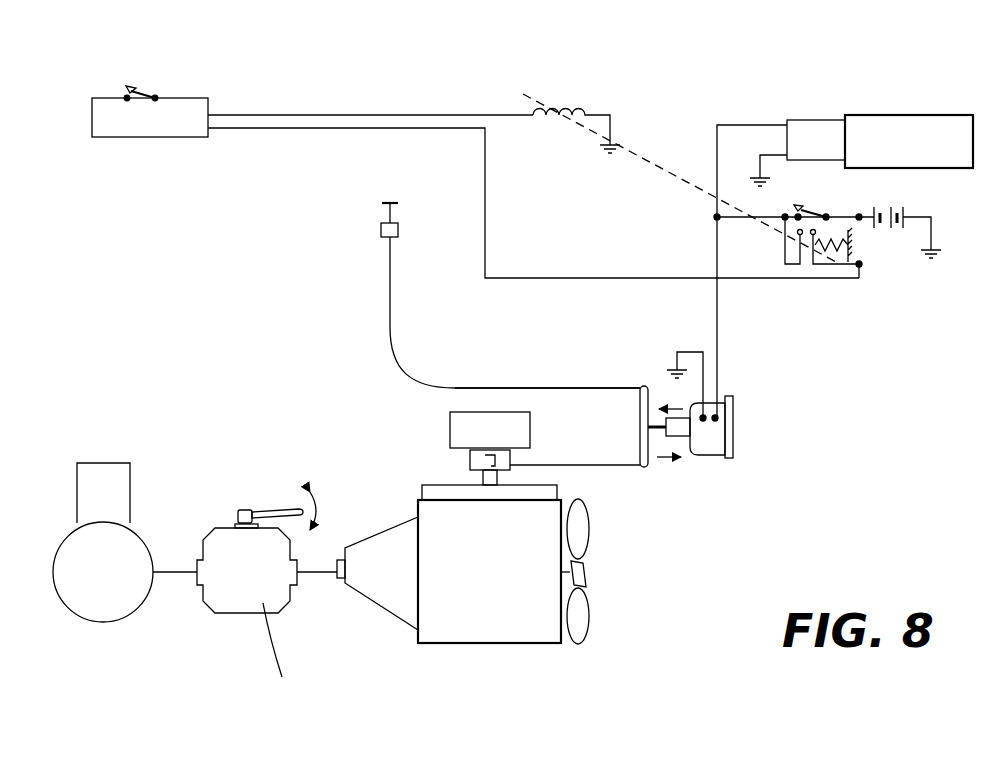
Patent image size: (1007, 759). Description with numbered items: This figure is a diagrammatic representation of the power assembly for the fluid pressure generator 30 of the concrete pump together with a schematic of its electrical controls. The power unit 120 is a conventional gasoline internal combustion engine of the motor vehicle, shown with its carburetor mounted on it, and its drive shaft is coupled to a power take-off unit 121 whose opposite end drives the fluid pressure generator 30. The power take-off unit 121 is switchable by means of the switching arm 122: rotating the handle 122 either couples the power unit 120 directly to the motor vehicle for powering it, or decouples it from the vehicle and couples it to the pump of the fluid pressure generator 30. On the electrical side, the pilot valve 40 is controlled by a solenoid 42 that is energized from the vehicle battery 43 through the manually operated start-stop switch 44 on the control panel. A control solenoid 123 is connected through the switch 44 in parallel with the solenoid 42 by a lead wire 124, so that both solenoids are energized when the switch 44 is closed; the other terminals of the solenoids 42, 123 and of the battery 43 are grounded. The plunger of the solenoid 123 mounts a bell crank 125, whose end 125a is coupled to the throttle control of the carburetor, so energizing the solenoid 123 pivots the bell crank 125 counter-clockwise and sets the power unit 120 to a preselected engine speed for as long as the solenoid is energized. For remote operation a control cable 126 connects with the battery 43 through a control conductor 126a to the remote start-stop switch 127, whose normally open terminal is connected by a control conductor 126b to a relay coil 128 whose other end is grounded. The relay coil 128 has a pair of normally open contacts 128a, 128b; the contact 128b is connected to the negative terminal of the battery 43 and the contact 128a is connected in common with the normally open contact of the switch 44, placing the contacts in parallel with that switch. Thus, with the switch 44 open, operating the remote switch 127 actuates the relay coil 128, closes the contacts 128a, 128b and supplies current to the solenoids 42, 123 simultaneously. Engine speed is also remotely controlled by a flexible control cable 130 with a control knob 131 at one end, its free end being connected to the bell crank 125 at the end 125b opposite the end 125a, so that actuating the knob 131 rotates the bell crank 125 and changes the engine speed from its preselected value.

The remote start-stop switch 127 is at (152, 83).
The control cable 126 is at (405, 113).
The control conductor 126b is at (517, 113).
The relay coil 128 is at (553, 112).
The lead wire 124 is at (717, 165).
The solenoid 42 is at (830, 120).
The pilot valve 40 is at (917, 120).
The start-stop switch 44 is at (813, 209).
The battery 43 is at (895, 200).
The relay contact 128a is at (798, 237).
The relay contact 128b is at (831, 261).
The control conductor 126a is at (760, 283).
The control knob 131 is at (382, 203).
The control cable 130 is at (390, 291).
The control solenoid 123 is at (733, 429).
The bell crank 125 is at (640, 418).
The bell crank end 125b is at (643, 386).
The bell crank end 125a is at (644, 468).
The power unit 120 is at (479, 584).
The power take-off unit 121 is at (247, 615).
The switching arm 122 is at (283, 510).
The fluid pressure generator 30 is at (166, 510).